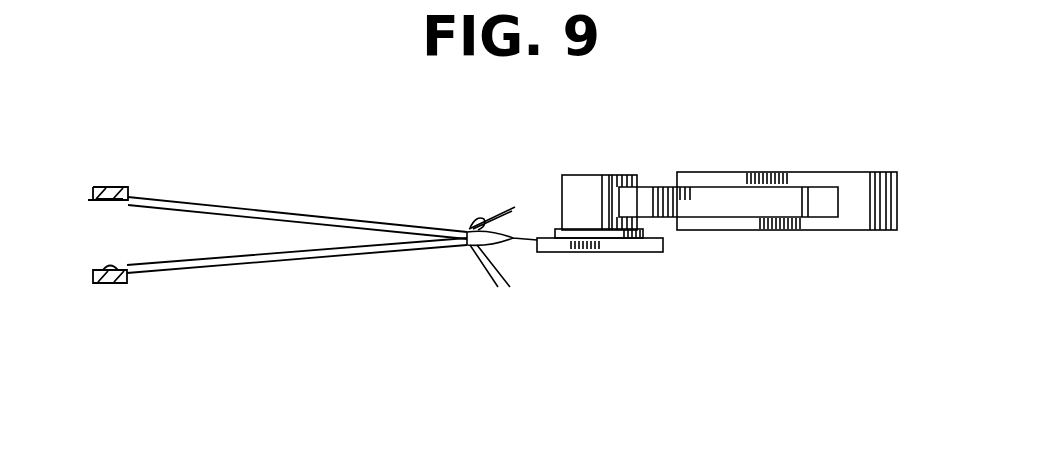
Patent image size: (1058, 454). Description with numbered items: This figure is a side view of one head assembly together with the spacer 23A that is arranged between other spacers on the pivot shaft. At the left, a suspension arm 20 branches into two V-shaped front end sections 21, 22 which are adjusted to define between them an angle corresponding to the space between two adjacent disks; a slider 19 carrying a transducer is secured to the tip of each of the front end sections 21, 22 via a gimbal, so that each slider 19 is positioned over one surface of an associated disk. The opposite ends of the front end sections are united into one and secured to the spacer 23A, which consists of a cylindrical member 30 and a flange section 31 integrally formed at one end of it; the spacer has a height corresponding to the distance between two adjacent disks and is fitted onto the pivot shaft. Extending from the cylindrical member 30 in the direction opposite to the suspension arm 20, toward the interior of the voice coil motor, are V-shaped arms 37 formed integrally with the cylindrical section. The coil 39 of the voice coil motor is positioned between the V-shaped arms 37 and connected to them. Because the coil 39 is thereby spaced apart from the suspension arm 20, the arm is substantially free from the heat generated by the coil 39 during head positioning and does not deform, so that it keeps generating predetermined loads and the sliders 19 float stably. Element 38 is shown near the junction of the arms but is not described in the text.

The slider 19 is at (127, 192).
The suspension arm 20 is at (508, 243).
The front end section 21 is at (262, 210).
The front end section 22 is at (260, 262).
The spacer 23A is at (674, 261).
The cylindrical member 30 is at (592, 178).
The flange section 31 is at (620, 252).
The V-shaped arms 37 is at (755, 207).
The lead wires 38 is at (487, 268).
The coil 39 is at (853, 185).